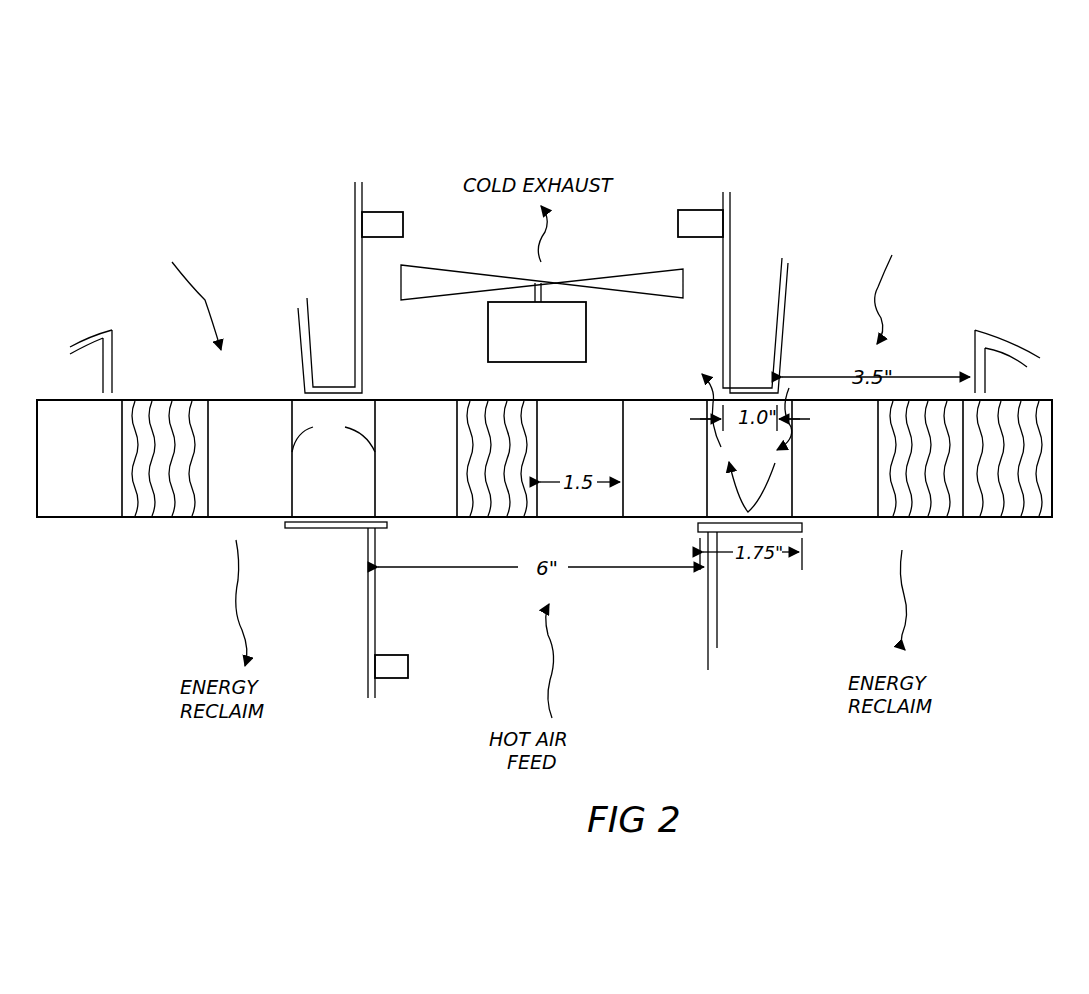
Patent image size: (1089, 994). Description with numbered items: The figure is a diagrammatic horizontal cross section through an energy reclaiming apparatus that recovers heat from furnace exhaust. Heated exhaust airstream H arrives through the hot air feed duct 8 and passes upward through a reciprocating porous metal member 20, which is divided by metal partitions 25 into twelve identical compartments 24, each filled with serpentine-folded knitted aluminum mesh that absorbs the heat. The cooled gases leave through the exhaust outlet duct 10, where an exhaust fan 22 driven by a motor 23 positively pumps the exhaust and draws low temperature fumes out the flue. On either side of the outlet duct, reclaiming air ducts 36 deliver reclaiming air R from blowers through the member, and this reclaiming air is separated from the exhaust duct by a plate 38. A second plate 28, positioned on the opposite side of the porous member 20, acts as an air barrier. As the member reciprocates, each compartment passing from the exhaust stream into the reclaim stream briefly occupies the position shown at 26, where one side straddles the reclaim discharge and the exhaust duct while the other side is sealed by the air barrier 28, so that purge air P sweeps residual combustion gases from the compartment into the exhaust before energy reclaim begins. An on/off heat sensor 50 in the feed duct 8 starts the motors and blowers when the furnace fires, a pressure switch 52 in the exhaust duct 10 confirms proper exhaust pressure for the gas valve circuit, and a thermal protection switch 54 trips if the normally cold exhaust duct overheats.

The hot air feed duct 8 is at (375, 607).
The exhaust outlet duct 10 is at (362, 357).
The porous metal member 20 is at (993, 538).
The exhaust fan 22 is at (448, 270).
The motor 23 is at (586, 323).
The compartments 24 is at (240, 416).
The metal partitions 25 is at (333, 433).
The purge position 26 is at (776, 497).
The plate 28 is at (326, 530).
The reclaiming air ducts 36 is at (297, 334).
The plate 38 is at (340, 386).
The on/off heat sensor 50 is at (408, 663).
The pressure switch 52 is at (390, 213).
The thermal protection switch 54 is at (693, 214).
The reclaiming air R is at (193, 283).
The purge air P is at (775, 470).
The heated exhaust airstream H is at (546, 675).